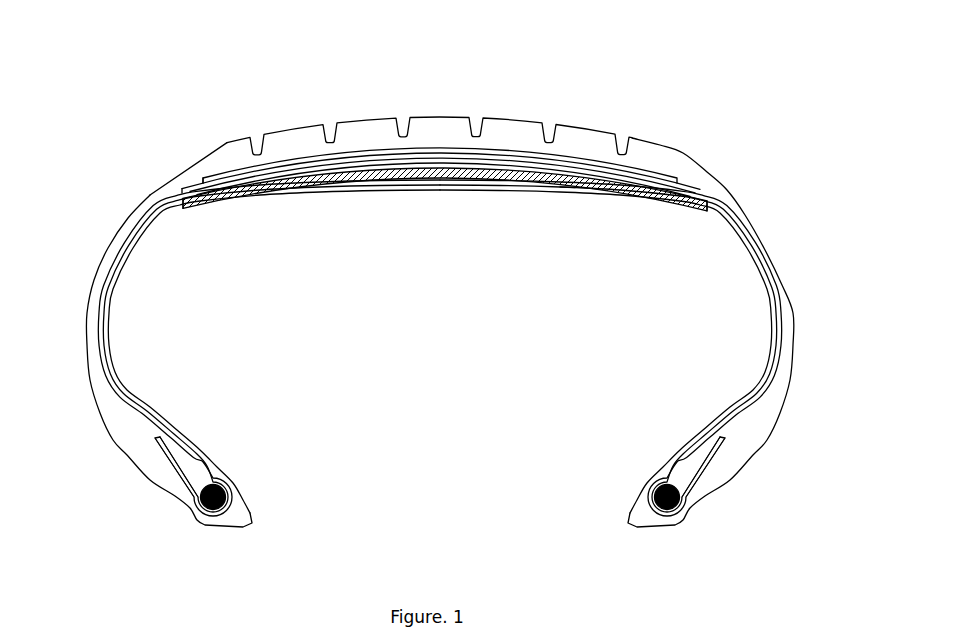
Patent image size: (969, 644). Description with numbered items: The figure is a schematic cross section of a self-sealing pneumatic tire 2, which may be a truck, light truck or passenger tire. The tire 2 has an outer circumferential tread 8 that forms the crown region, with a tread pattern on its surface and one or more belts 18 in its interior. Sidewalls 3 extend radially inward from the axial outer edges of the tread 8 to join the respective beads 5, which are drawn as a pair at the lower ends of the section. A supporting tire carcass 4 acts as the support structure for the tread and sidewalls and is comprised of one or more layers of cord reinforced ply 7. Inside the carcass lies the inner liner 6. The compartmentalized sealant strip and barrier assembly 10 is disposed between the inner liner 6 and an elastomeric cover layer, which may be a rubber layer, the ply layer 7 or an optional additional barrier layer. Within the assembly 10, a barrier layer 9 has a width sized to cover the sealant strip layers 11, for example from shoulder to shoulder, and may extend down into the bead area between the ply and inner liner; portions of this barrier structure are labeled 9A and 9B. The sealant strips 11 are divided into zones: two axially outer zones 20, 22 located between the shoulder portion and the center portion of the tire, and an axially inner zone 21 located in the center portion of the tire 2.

The tire 2 is at (697, 147).
The sidewalls 3 is at (88, 367).
The tire carcass 4 is at (118, 358).
The beads 5 is at (213, 510).
The inner liner 6 is at (217, 458).
The cord reinforced ply 7 is at (98, 308).
The tread 8 is at (365, 128).
The barrier layer 9 is at (387, 165).
The belt layer 9A is at (177, 205).
The belt layer 9B is at (702, 206).
The compartmentalized sealant strip and barrier assembly 10 is at (567, 182).
The sealant strip layers 11 is at (545, 183).
The belts 18 is at (235, 170).
The axially outer zone 20 is at (264, 198).
The axially inner zone 21 is at (520, 185).
The axially outer zone 22 is at (697, 190).